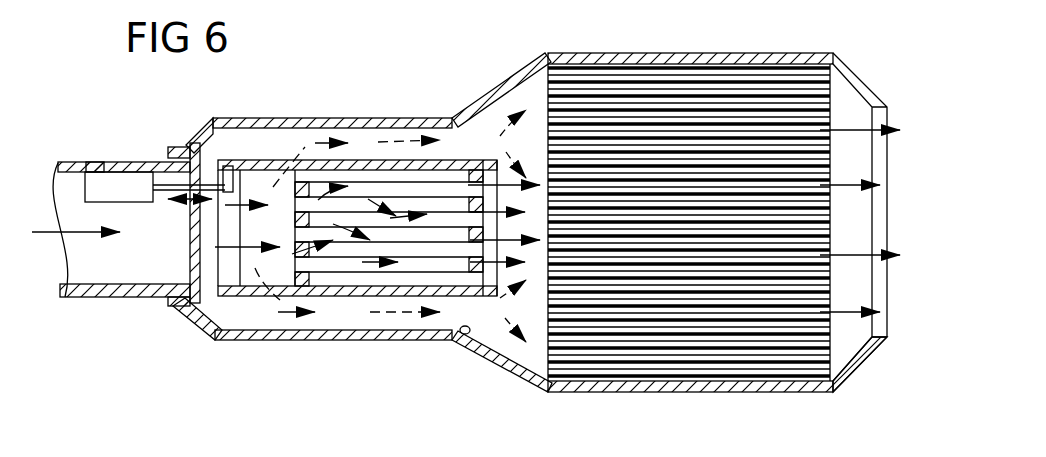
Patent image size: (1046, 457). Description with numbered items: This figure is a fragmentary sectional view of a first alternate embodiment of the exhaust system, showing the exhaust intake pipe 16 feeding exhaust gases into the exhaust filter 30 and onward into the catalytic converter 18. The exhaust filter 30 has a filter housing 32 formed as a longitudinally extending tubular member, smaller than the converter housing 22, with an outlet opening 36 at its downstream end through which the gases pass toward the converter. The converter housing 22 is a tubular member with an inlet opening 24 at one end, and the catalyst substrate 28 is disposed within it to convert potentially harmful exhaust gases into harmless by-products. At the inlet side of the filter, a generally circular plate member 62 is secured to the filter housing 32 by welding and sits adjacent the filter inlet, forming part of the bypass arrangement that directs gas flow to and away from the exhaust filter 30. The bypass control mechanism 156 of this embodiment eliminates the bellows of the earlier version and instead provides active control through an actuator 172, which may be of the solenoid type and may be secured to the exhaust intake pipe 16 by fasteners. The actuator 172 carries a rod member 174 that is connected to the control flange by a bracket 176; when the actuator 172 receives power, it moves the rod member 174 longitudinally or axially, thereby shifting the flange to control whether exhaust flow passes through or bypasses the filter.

The exhaust intake pipe 16 is at (100, 298).
The catalytic converter 18 is at (598, 60).
The converter housing 22 is at (652, 392).
The inlet opening 24 is at (455, 334).
The catalyst substrate 28 is at (748, 80).
The exhaust filter 30 is at (358, 150).
The filter housing 32 is at (298, 118).
The outlet opening 36 is at (436, 118).
The plate member 62 is at (192, 308).
The bypass control mechanism 156 is at (95, 168).
The actuator 172 is at (123, 172).
The rod member 174 is at (161, 168).
The bracket 176 is at (230, 162).